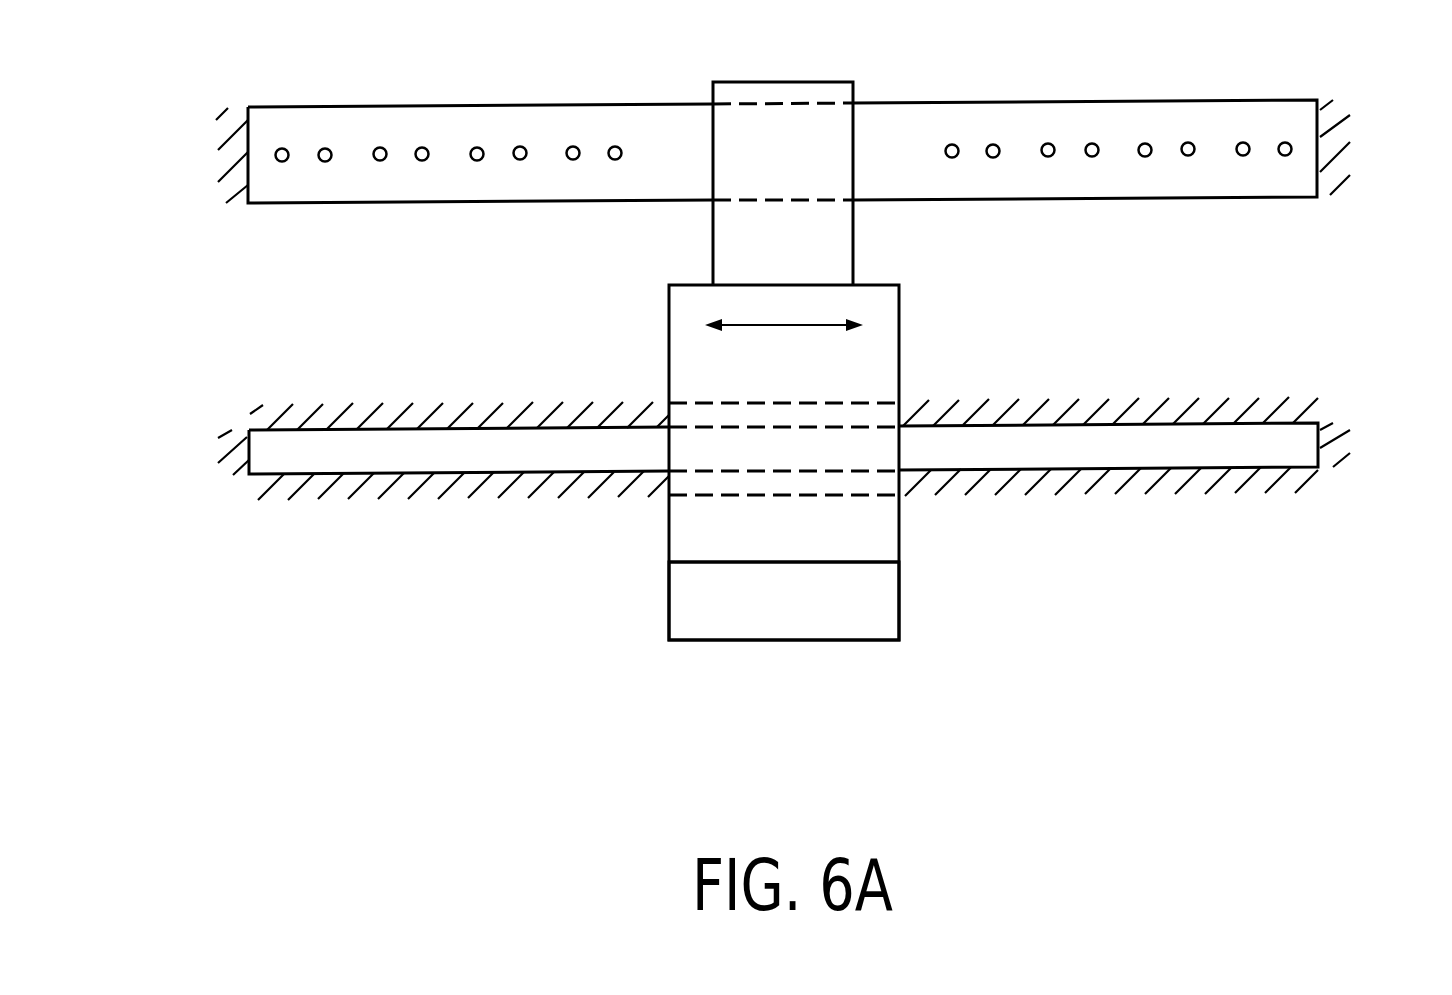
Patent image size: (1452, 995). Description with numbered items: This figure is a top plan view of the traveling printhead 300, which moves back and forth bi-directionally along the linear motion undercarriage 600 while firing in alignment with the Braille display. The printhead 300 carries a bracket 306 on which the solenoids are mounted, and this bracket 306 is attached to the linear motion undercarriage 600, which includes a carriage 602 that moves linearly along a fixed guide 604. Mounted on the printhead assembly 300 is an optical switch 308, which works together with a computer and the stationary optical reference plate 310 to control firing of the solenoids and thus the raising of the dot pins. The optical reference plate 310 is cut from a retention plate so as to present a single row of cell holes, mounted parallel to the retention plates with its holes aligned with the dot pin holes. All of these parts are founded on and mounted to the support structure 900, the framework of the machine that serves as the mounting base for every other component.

The optical reference plate 310 is at (1132, 101).
The optical switch 308 is at (832, 263).
The bracket 306 is at (900, 352).
The printhead 300 is at (638, 350).
The fixed guide 604 is at (1035, 442).
The carriage 602 is at (878, 495).
The linear motion undercarriage 600 is at (825, 623).
The support structure 900 is at (233, 140).